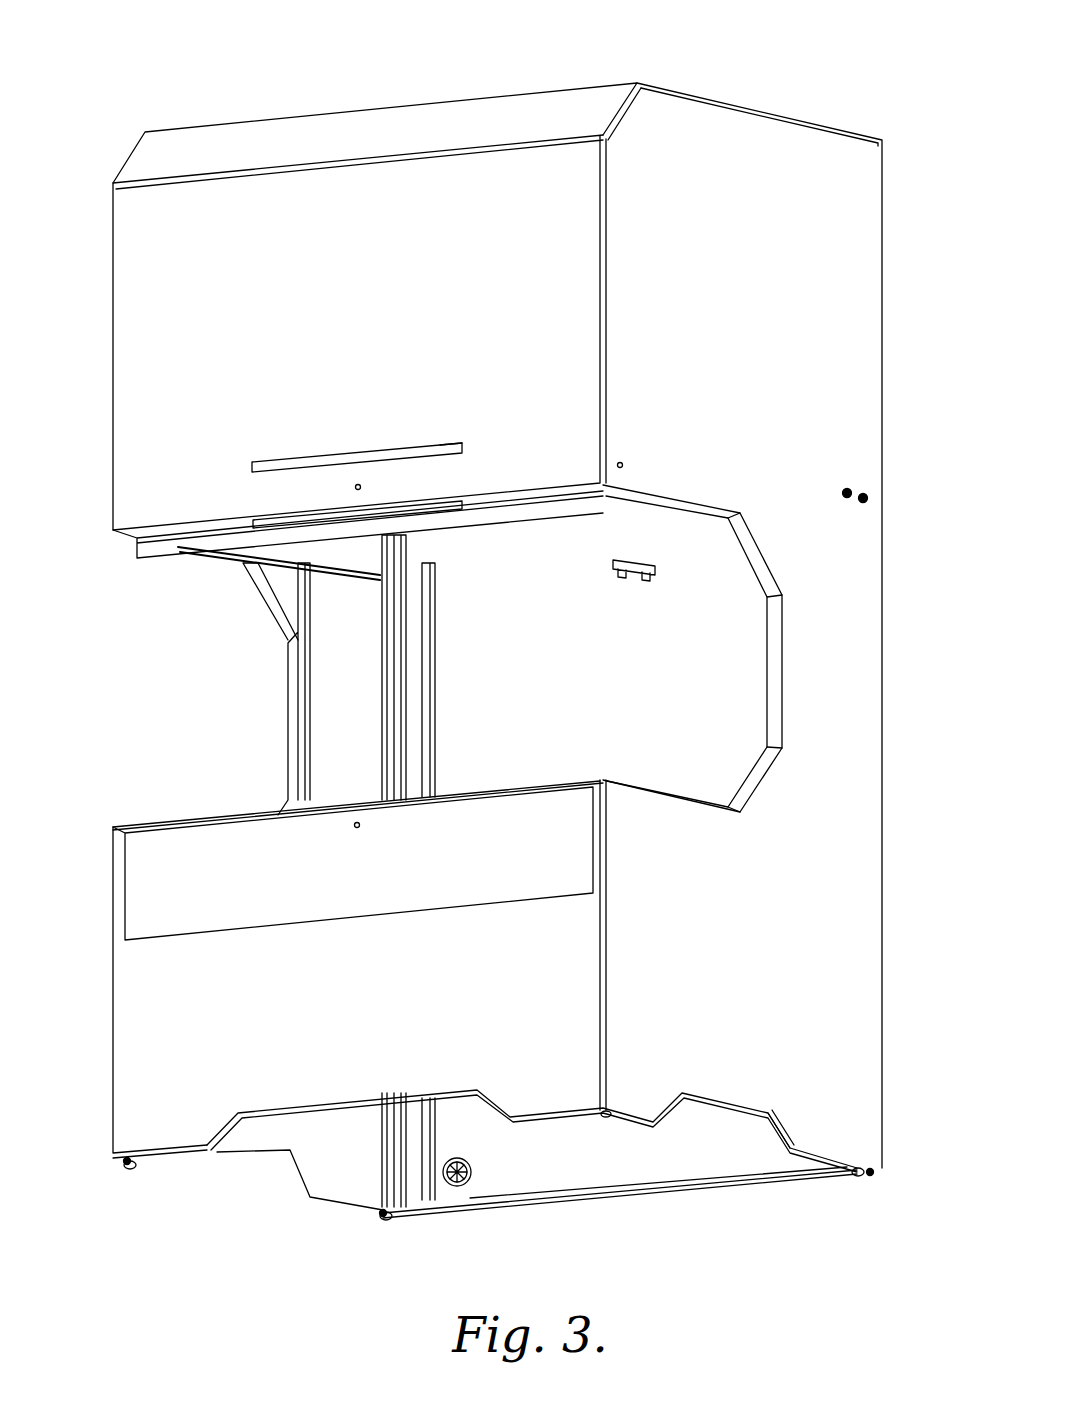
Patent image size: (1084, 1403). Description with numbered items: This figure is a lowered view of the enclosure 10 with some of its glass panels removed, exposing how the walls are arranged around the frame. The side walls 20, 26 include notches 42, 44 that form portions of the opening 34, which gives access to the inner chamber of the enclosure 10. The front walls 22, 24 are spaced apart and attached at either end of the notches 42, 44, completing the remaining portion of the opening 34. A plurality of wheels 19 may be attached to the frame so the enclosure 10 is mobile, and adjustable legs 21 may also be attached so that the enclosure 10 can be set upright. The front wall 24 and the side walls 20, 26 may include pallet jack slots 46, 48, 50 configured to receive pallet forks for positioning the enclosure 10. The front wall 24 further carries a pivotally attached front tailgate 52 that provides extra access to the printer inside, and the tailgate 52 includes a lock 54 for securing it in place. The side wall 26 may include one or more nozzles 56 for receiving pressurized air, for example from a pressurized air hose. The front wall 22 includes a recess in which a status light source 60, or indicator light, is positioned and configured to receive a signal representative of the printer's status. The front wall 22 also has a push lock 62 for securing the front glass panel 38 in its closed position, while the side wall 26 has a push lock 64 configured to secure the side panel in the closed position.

The enclosure 10 is at (765, 50).
The wheels 19 is at (130, 1170).
The side wall 20 is at (335, 685).
The adjustable legs 21 is at (125, 1163).
The front wall 22 is at (148, 305).
The front wall 24 is at (148, 1004).
The side wall 26 is at (876, 176).
The opening 34 is at (530, 745).
The front glass panel 38 is at (160, 548).
The notch 42 is at (293, 690).
The notch 44 is at (775, 680).
The pallet jack slot 46 is at (268, 1163).
The pallet jack slot 48 is at (488, 1130).
The pallet jack slot 50 is at (370, 452).
The front tailgate 52 is at (150, 878).
The lock 54 is at (352, 827).
The nozzles 56 is at (893, 485).
The status light source 60 is at (445, 444).
The push lock 62 is at (355, 488).
The push lock 64 is at (620, 463).